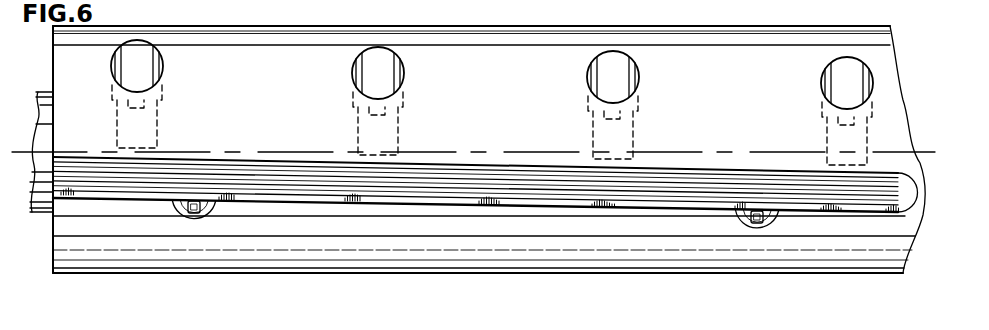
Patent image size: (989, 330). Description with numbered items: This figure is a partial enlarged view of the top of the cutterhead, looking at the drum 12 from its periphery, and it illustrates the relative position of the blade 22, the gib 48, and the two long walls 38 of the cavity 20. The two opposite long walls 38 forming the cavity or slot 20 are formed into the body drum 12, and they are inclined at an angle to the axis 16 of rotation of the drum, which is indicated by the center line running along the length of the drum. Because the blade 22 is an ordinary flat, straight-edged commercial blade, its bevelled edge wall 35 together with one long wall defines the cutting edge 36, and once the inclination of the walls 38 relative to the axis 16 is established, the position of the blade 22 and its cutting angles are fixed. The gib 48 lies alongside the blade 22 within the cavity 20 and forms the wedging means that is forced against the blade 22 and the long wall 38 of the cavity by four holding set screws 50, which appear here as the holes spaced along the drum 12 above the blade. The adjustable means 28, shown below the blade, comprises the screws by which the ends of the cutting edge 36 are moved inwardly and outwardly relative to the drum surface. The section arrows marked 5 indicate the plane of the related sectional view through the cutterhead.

The section line 5- 5 is at (608, 85).
The body drum 12 is at (581, 43).
The axis of revolution 16 is at (752, 157).
The cavity 20 is at (907, 208).
The blade 22 is at (621, 212).
The adjustable means 28 is at (203, 220).
The bevelled edge wall 35 is at (108, 190).
The cutting edge 36 is at (158, 175).
The long wall 38 is at (262, 150).
The gib 48 is at (512, 183).
The holding set screw 50 is at (153, 117).